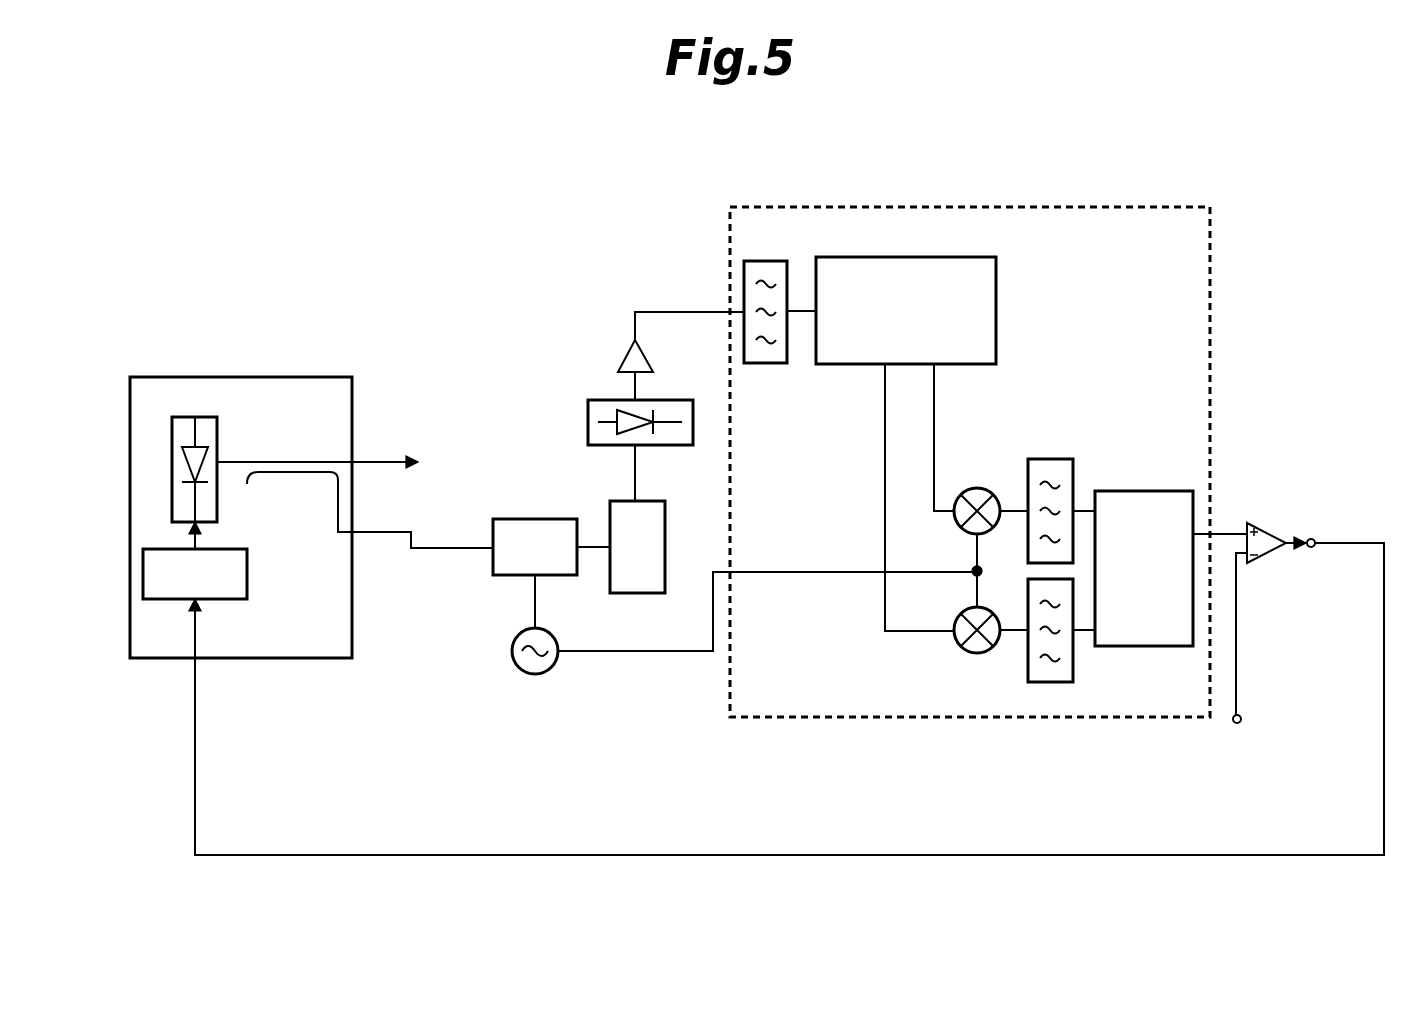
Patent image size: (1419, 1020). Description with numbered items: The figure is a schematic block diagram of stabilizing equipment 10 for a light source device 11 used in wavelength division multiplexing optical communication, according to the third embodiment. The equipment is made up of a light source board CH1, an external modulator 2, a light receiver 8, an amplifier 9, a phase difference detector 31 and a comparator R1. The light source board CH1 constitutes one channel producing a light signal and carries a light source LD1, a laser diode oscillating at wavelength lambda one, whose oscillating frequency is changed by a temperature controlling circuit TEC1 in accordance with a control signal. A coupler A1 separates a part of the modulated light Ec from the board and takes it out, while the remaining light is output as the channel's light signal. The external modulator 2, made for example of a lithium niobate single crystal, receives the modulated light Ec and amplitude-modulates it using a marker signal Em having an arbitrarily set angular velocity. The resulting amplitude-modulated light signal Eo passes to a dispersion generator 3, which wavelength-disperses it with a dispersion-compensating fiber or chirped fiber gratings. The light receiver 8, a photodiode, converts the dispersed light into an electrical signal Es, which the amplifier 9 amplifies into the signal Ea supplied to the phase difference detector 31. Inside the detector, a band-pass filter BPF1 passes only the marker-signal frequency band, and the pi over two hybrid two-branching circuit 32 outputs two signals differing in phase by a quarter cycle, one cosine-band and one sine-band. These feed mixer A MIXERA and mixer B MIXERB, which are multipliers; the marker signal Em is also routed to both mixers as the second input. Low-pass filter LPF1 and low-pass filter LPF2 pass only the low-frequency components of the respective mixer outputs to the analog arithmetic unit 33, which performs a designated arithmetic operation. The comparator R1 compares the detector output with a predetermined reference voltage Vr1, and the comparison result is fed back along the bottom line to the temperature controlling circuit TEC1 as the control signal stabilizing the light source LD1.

The external modulator 2 is at (563, 502).
The dispersion generator 3 is at (648, 482).
The light receiver 8 is at (588, 410).
The amplifier 9 is at (619, 357).
The stabilizing equipment 10 is at (761, 199).
The light source device 11 is at (293, 332).
The phase difference detector 31 is at (860, 207).
The π/2 hybrid two-branching circuit 32 is at (962, 238).
The analog arithmetic unit 33 is at (1157, 493).
The light source board CH1 is at (320, 377).
The light source LD1 is at (181, 417).
The temperature controlling circuit TEC1 is at (240, 600).
The coupler A1 is at (355, 491).
The band-pass filter BPF1 is at (779, 298).
The low-pass filter LPF1 is at (1061, 498).
The low-pass filter LPF2 is at (1061, 648).
The mixer A MIXERA is at (978, 488).
The mixer B MIXERB is at (972, 653).
The comparator R1 is at (1322, 528).
The reference voltage Vr1 is at (1238, 656).
The marker signal Em is at (732, 659).
The modulated light Ec is at (478, 545).
The amplitude-modulated light signal Eo is at (590, 545).
The electrical signal Es is at (637, 390).
The amplified signal Ea is at (797, 318).